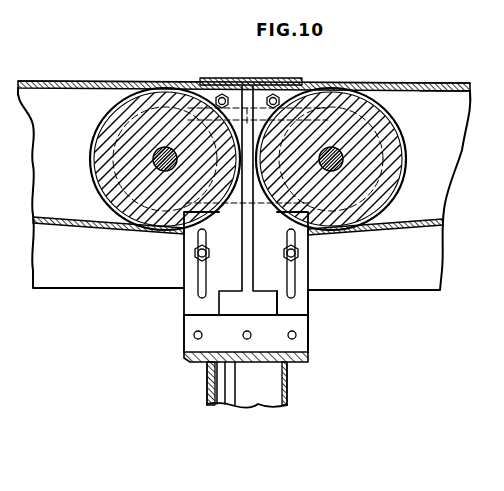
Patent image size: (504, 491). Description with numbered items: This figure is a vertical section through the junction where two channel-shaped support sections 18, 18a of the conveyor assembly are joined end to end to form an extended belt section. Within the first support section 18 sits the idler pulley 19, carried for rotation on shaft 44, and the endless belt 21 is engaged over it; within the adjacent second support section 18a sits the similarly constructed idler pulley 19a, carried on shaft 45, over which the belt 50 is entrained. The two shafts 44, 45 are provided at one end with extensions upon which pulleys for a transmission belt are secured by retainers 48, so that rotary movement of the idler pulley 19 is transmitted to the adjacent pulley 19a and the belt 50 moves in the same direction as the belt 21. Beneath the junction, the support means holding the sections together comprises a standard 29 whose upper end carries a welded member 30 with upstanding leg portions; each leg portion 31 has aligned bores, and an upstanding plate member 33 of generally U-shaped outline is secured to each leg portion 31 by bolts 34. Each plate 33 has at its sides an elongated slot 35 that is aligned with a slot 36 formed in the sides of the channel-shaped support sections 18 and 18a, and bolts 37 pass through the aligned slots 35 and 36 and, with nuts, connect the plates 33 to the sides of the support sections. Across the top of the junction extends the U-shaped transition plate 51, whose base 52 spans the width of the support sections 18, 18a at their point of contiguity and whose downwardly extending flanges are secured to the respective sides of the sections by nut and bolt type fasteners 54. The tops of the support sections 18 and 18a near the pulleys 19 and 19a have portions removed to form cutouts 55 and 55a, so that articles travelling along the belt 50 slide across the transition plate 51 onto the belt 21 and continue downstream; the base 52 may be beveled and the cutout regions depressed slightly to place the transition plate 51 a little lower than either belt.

The channel-shaped support section 18 is at (58, 283).
The channel-shaped support section 18a is at (392, 278).
The idler pulley 19 is at (93, 173).
The idler pulley 19a is at (379, 117).
The belt 21 is at (67, 80).
The standard 29 is at (288, 383).
The member 30 is at (190, 363).
The leg portion 31 is at (296, 346).
The upstanding plate member 33 is at (310, 302).
The bolt 34 is at (188, 336).
The elongated slot 35 is at (200, 296).
The slot 36 is at (195, 252).
The bolt 37 is at (198, 268).
The shaft 44 is at (152, 151).
The shaft 45 is at (344, 158).
The retainer 48 is at (151, 6).
The belt 50 is at (428, 85).
The U-shaped transition plate 51 is at (268, 77).
The base 52 is at (207, 78).
The nut and bolt type fastener 54 is at (225, 95).
The cutout 55 is at (128, 84).
The cutout 55a is at (374, 83).